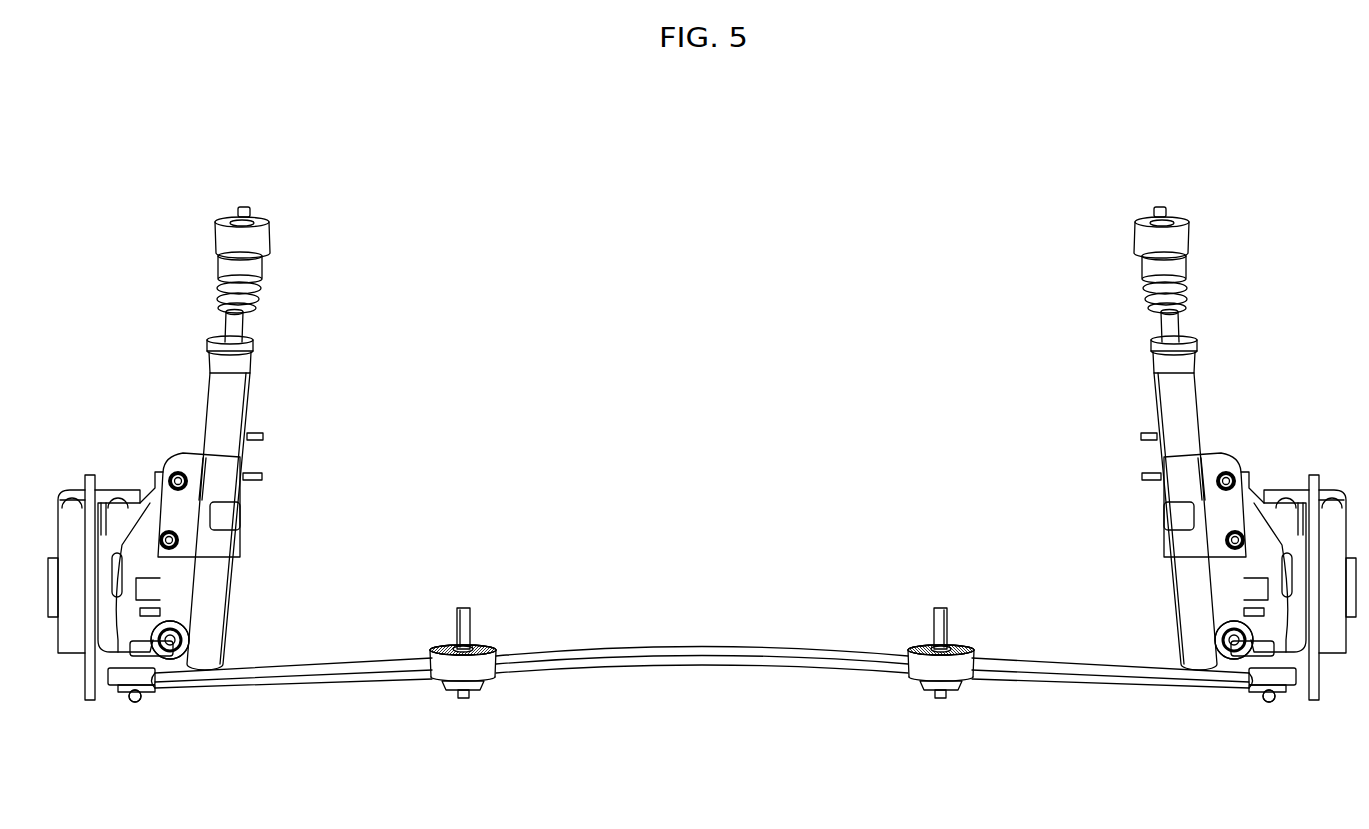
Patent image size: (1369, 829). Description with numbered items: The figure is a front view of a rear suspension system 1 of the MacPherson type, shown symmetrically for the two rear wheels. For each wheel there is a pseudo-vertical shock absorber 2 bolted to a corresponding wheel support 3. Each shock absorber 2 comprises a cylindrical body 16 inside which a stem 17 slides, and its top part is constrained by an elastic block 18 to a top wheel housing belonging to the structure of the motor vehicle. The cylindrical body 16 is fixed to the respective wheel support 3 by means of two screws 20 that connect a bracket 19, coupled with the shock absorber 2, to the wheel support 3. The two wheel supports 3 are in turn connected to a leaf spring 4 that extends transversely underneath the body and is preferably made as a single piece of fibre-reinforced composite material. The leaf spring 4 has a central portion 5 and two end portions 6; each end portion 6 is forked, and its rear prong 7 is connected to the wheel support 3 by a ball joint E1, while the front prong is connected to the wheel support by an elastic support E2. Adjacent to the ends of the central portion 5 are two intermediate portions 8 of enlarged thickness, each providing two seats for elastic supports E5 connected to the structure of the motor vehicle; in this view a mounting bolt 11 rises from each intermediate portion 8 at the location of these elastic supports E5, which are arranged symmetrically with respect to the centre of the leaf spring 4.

The rear suspension system 1 is at (769, 355).
The shock absorber 2 is at (258, 404).
The wheel support 3 is at (147, 484).
The leaf spring 4 is at (702, 688).
The central portion 5 is at (770, 648).
The end portion 6 is at (340, 665).
The rear prong 7 is at (182, 678).
The intermediate portion 8 is at (443, 665).
The mounting bolt 11 is at (462, 607).
The cylindrical body 16 is at (213, 415).
The stem 17 is at (233, 322).
The elastic block 18 is at (258, 238).
The bracket 19 is at (225, 480).
The screws 20 is at (176, 543).
The ball joint E1 is at (122, 692).
The elastic support E2 is at (188, 606).
The elastic support E5 is at (450, 645).